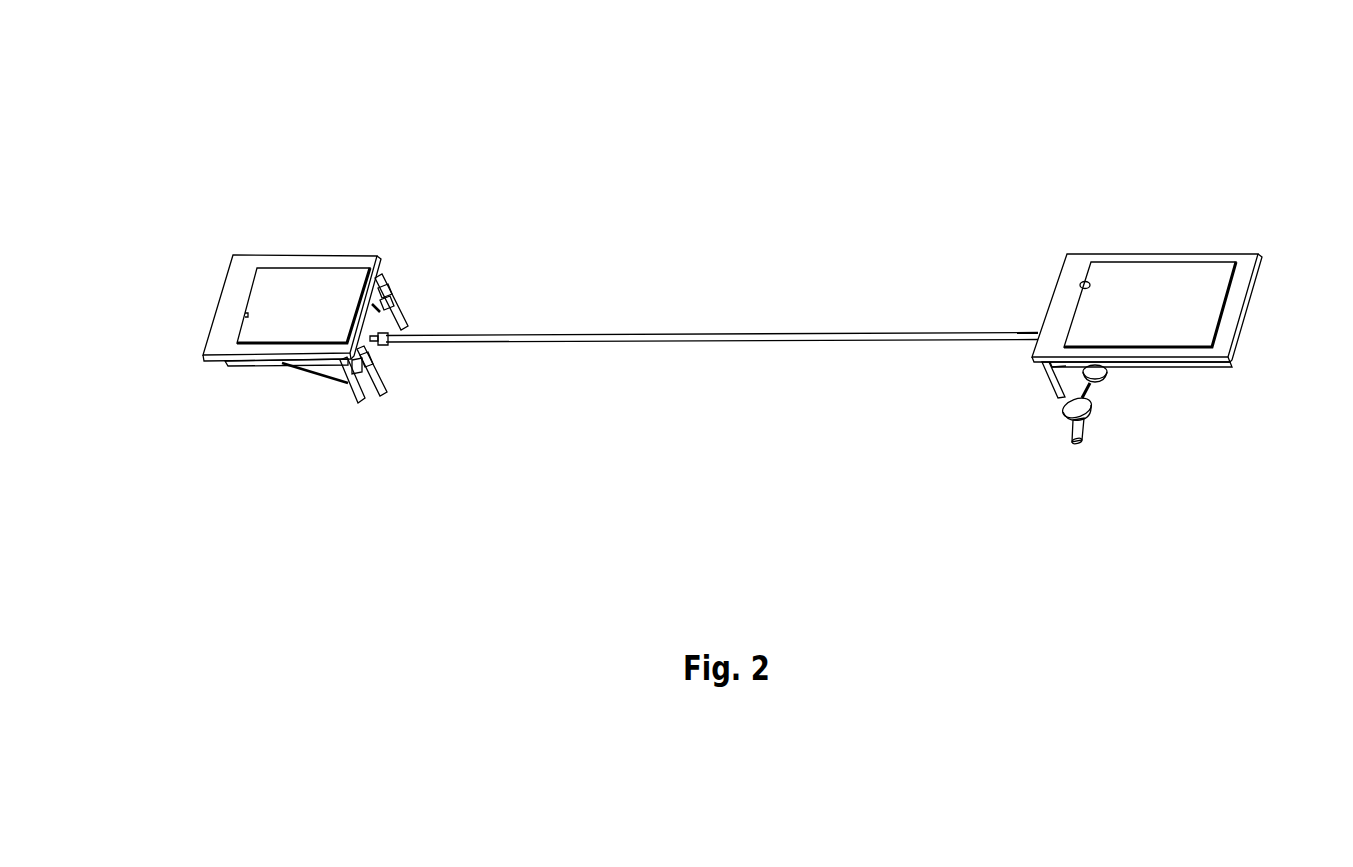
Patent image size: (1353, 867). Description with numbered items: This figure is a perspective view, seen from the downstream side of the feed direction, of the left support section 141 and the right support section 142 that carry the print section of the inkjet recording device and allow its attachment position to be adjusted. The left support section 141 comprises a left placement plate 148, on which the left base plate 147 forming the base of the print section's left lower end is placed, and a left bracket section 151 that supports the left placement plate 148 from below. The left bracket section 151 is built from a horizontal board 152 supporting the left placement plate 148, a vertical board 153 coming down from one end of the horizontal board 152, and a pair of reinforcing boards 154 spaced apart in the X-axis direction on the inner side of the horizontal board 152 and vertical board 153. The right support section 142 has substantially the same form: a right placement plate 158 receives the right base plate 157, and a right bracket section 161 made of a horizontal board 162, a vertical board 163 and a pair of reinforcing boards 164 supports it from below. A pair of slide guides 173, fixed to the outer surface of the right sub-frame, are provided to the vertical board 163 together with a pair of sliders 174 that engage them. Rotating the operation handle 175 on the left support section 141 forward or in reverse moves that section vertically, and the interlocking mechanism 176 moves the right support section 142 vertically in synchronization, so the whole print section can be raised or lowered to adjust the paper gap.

The left support section 141 is at (1162, 118).
The right support section 142 is at (299, 118).
The left base plate 147 is at (1217, 300).
The left placement plate 148 is at (1064, 278).
The left bracket section 151 is at (1295, 436).
The horizontal board 152 is at (1205, 362).
The vertical board 153 is at (1104, 385).
The reinforcing boards 154 is at (1117, 368).
The right base plate 157 is at (257, 307).
The right placement plate 158 is at (292, 262).
The right bracket section 161 is at (362, 428).
The horizontal board 162 is at (243, 365).
The vertical board 163 is at (358, 383).
The reinforcing boards 164 is at (313, 368).
The slide guides 173 is at (403, 342).
The sliders 174 is at (351, 320).
The operation handle 175 is at (1083, 435).
The interlocking mechanism 176 is at (877, 338).